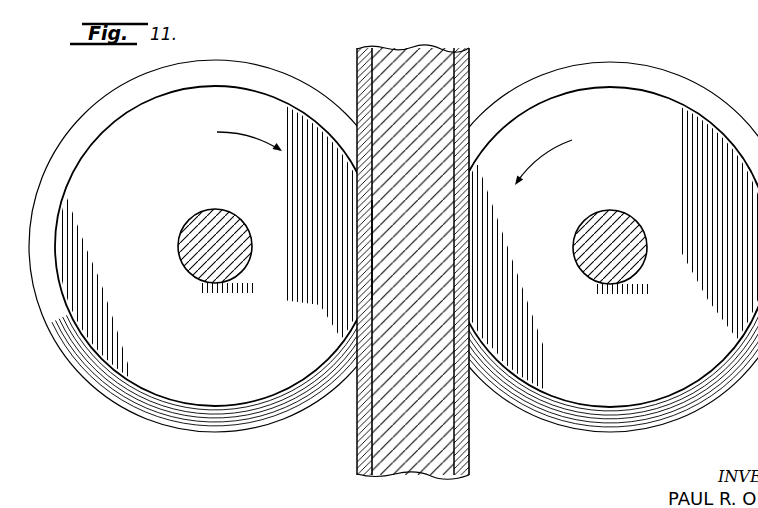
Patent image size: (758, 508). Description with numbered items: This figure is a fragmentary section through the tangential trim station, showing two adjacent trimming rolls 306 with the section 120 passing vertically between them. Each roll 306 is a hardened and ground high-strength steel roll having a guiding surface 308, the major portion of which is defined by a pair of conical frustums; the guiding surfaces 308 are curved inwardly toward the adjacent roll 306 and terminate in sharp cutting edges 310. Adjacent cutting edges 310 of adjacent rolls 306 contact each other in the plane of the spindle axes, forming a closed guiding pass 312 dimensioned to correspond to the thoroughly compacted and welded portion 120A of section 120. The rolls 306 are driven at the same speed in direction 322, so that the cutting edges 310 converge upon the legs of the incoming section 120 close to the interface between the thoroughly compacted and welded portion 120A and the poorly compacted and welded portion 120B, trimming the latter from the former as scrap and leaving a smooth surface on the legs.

The section 120 is at (442, 67).
The thoroughly compacted and welded portion 120A is at (469, 451).
The poorly compacted and welded portion 120B is at (357, 447).
The trimming roll 306 is at (277, 341).
The guiding surface 308 is at (216, 70).
The cutting edge 310 is at (262, 90).
The guiding pass 312 is at (407, 224).
The direction 322 is at (242, 135).